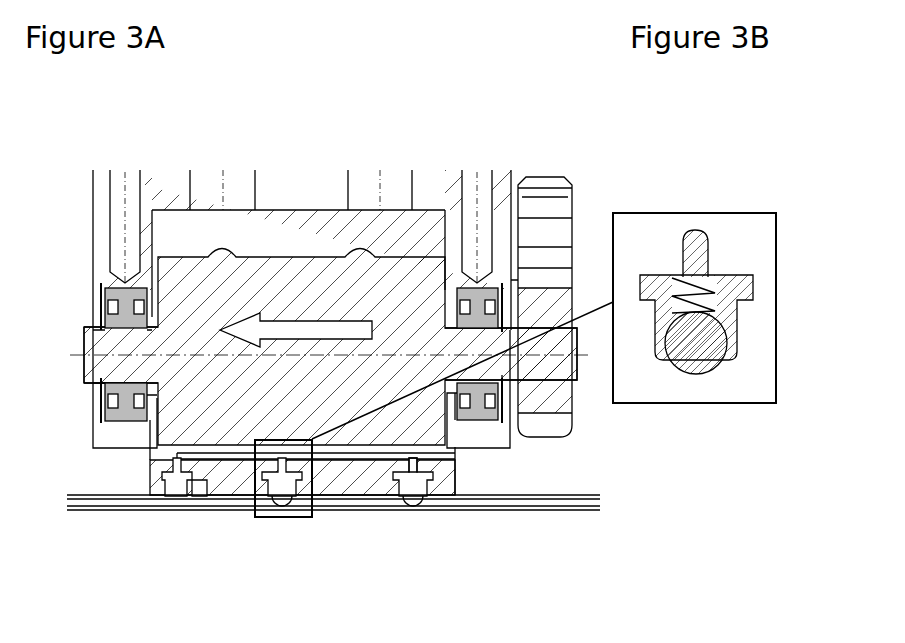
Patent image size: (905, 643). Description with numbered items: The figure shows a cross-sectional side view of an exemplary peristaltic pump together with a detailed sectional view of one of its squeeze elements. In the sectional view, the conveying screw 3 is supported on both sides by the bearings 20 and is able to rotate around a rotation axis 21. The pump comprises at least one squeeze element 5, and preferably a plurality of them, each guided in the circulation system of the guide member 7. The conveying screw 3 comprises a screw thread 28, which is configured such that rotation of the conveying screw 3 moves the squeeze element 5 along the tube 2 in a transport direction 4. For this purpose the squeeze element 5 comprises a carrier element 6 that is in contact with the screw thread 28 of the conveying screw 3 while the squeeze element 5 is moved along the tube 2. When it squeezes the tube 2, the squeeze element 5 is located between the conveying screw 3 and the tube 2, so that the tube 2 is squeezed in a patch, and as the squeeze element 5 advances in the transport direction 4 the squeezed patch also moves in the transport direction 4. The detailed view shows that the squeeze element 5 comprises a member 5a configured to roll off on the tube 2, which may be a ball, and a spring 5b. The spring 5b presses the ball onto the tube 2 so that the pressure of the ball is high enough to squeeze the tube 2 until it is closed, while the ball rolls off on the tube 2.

In FIG. 3A, the tube 2 is at (583, 500).
In FIG. 3A, the conveying screw 3 is at (305, 292).
In FIG. 3A, the transport direction 4 is at (357, 330).
In FIG. 3A, the squeeze element 5 is at (408, 492).
In FIG. 3B, the squeeze element 5 is at (646, 228).
In FIG. 3B, the member configured to roll off on the tube 5a is at (707, 342).
In FIG. 3B, the spring 5b is at (705, 290).
In FIG. 3A, the carrier element 6 is at (420, 466).
In FIG. 3B, the carrier element 6 is at (692, 247).
In FIG. 3A, the guide member 7 is at (230, 473).
In FIG. 3A, the bearings 20 is at (106, 420).
In FIG. 3A, the rotation axis 21 is at (100, 352).
In FIG. 3A, the screw thread 28 is at (427, 455).